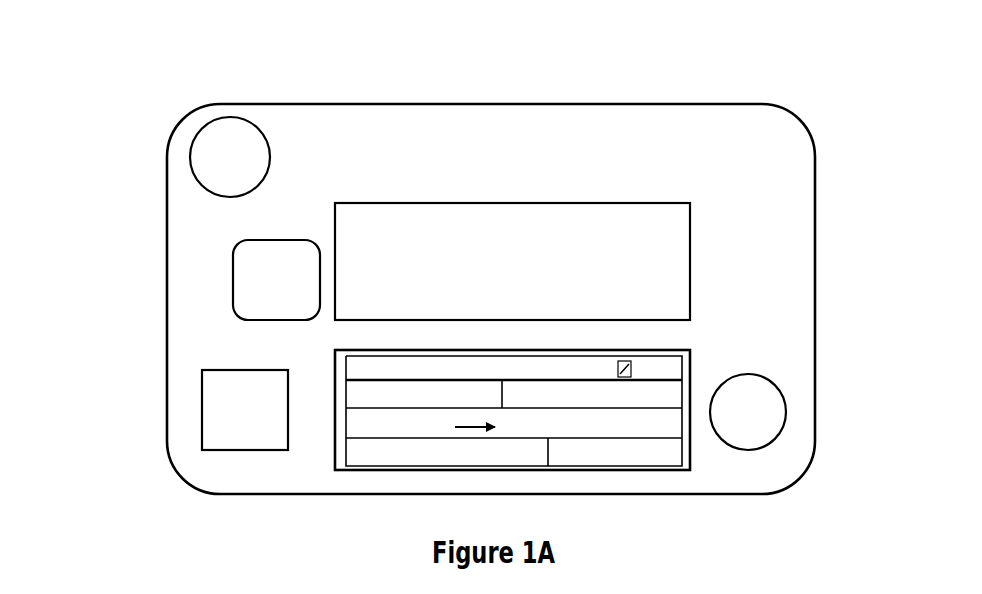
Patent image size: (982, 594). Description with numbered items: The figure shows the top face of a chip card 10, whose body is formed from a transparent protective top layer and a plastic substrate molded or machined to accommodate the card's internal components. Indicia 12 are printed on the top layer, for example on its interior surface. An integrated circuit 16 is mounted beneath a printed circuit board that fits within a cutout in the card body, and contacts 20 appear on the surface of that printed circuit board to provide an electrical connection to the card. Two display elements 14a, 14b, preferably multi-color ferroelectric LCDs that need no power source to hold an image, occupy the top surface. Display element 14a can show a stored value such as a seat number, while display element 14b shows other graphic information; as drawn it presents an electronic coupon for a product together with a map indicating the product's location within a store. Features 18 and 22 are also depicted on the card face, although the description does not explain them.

The chip card 10 is at (126, 71).
The indicia 12 is at (529, 271).
The display element 14a is at (543, 241).
The display element 14b is at (556, 403).
The integrated circuit 16 is at (748, 412).
The logo area 18 is at (230, 157).
The contacts 20 is at (276, 280).
The photograph area 22 is at (245, 410).